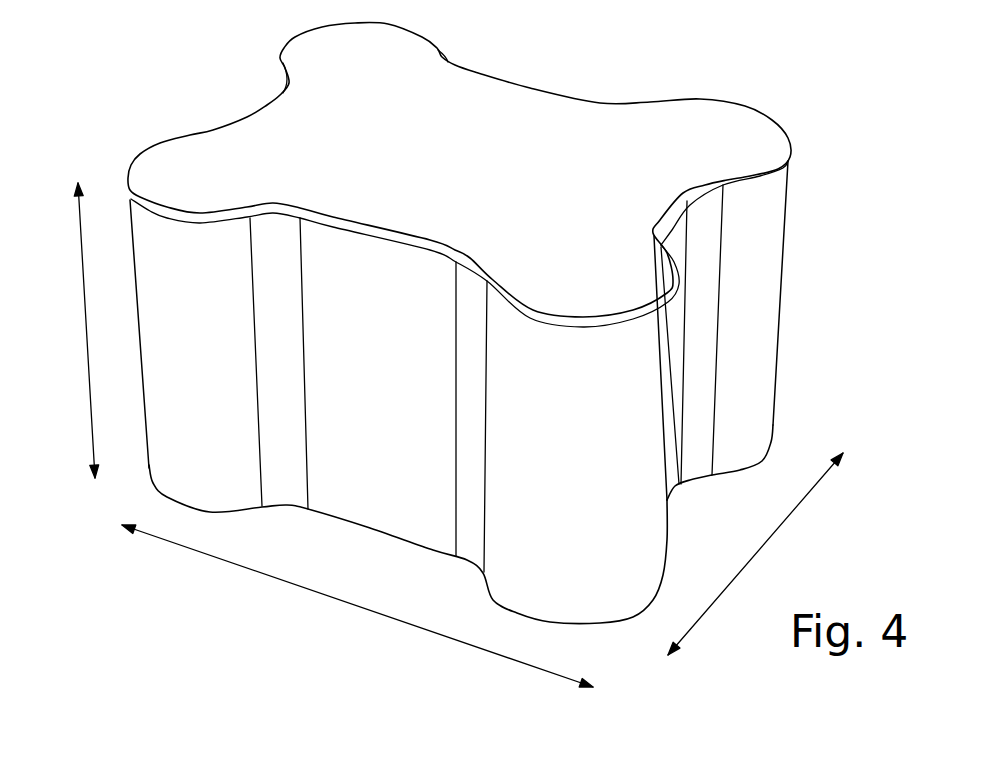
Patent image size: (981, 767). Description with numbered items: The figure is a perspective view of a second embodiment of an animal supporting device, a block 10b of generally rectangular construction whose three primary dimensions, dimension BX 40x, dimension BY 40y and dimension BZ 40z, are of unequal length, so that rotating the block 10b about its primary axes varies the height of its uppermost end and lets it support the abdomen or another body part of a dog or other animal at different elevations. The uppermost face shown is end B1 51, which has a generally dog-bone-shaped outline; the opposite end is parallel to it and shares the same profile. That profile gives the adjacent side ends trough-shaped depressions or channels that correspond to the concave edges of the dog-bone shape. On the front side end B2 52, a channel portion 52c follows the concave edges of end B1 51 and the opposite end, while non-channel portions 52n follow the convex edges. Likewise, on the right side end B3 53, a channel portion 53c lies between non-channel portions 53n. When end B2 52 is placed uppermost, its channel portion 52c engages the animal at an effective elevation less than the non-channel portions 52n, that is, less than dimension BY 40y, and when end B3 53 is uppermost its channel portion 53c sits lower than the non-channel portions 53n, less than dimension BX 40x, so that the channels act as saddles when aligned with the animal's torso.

The supporting device or block 10b is at (489, 354).
The end B1 51 is at (533, 105).
The end B2 52 is at (125, 472).
The non-channel portions of end B2 52n is at (151, 236).
The channel portion of end B2 52c is at (358, 477).
The end B3 53 is at (853, 227).
The channel portion of end B3 53c is at (673, 242).
The non-channel portions of end B3 53n is at (755, 412).
The dimension BX 40x is at (357, 606).
The dimension BY 40y is at (755, 554).
The dimension BZ 40z is at (69, 330).